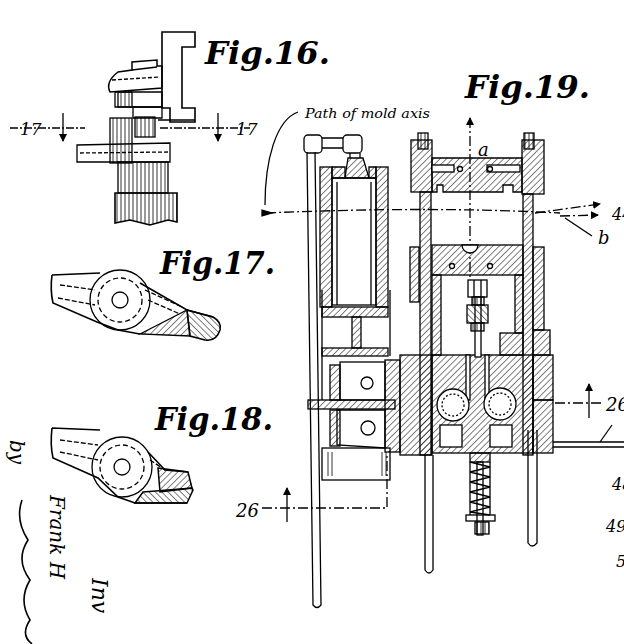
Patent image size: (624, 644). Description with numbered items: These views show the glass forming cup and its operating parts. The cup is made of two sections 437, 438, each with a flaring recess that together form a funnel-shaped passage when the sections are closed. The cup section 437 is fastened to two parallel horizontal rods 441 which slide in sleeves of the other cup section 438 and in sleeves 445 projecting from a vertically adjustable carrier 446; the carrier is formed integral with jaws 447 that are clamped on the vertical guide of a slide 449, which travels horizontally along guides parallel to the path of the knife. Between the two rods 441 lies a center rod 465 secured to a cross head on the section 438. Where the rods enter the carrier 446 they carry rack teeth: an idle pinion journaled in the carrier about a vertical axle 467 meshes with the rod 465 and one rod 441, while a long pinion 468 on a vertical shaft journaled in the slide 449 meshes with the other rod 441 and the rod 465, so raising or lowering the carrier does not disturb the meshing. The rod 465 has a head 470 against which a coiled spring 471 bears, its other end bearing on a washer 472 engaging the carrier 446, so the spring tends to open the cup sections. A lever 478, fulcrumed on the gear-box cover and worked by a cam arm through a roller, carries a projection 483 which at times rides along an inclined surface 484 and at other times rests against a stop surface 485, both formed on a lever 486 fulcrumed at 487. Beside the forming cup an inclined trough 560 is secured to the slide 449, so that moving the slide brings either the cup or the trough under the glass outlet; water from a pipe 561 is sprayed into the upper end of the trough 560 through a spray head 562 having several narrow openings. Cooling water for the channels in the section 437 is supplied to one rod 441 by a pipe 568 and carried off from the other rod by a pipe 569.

In FIG. 19, the cup section 437 is at (445, 163).
In FIG. 19, the cup section 438 is at (448, 262).
In FIG. 19, the horizontal rods 441 is at (535, 235).
In FIG. 19, the sleeves 445 is at (545, 331).
In FIG. 19, the carrier 446 is at (551, 371).
In FIG. 19, the jaws 447 is at (398, 360).
In FIG. 19, the slide 449 is at (347, 420).
In FIG. 19, the rod 465 is at (479, 368).
In FIG. 19, the vertical axle 467 is at (553, 420).
In FIG. 19, the long pinion 468 is at (452, 392).
In FIG. 19, the head 470 is at (494, 524).
In FIG. 19, the coiled spring 471 is at (470, 497).
In FIG. 19, the washer 472 is at (491, 458).
In FIG. 16, the lever 478 is at (116, 78).
In FIG. 16, the projection 483 is at (148, 130).
In FIG. 17, the projection 483 is at (218, 325).
In FIG. 18, the projection 483 is at (180, 470).
In FIG. 17, the inclined surface 484 is at (172, 318).
In FIG. 18, the stop surface 485 is at (192, 500).
In FIG. 16, the lever 486 is at (98, 153).
In FIG. 17, the lever 486 is at (73, 297).
In FIG. 18, the lever 486 is at (72, 445).
In FIG. 17, the fulcrum 487 is at (120, 309).
In FIG. 18, the fulcrum 487 is at (121, 459).
In FIG. 19, the inclined trough 560 is at (355, 283).
In FIG. 19, the pipe 561 is at (313, 541).
In FIG. 19, the spray head 562 is at (366, 172).
In FIG. 19, the pipe 568 is at (426, 548).
In FIG. 19, the pipe 569 is at (538, 527).